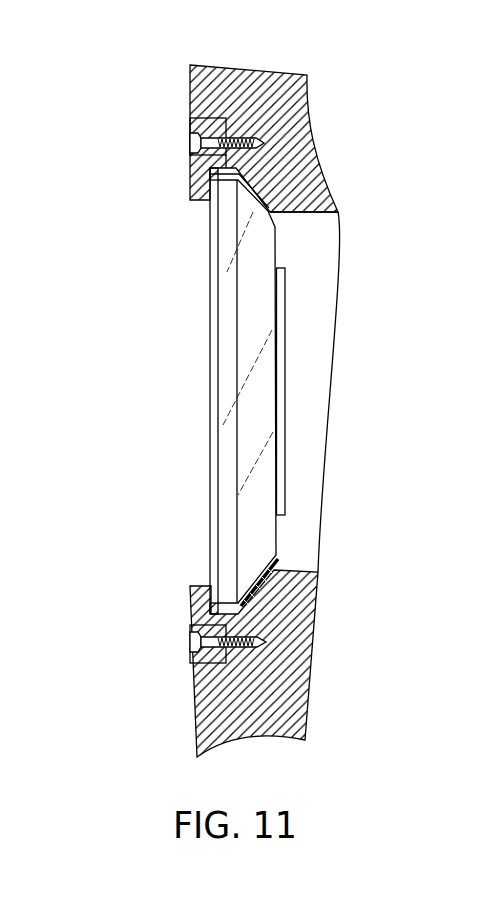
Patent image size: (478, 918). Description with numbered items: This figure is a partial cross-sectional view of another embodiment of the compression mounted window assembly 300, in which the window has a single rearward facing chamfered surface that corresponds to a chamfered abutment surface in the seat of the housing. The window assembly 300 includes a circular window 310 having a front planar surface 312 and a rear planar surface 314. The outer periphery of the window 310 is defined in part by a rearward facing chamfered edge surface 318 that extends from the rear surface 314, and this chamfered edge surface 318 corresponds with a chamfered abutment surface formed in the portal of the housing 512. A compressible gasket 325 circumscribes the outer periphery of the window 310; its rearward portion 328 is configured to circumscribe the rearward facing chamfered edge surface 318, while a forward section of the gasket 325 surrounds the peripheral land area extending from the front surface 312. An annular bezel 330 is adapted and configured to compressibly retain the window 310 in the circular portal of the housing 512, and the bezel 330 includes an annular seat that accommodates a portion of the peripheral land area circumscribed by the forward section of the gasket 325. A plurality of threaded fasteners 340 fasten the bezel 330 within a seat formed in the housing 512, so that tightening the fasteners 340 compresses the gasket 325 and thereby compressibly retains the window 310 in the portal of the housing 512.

The compressible window assembly 300 is at (166, 99).
The housing 512 is at (288, 95).
The threaded fasteners 340 is at (190, 143).
The compressible gasket 325 is at (253, 174).
The annular bezel 330 is at (206, 198).
The rearward facing chamfered edge surface 318 is at (275, 228).
The circular window 310 is at (258, 323).
The front planar surface 312 is at (217, 377).
The rear planar surface 314 is at (278, 533).
The rearward portion of gasket 328 is at (252, 605).